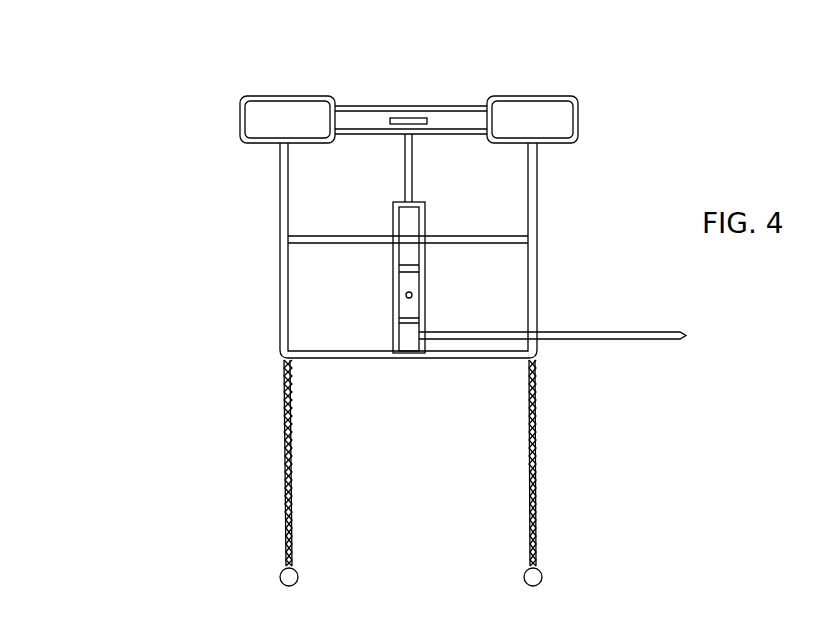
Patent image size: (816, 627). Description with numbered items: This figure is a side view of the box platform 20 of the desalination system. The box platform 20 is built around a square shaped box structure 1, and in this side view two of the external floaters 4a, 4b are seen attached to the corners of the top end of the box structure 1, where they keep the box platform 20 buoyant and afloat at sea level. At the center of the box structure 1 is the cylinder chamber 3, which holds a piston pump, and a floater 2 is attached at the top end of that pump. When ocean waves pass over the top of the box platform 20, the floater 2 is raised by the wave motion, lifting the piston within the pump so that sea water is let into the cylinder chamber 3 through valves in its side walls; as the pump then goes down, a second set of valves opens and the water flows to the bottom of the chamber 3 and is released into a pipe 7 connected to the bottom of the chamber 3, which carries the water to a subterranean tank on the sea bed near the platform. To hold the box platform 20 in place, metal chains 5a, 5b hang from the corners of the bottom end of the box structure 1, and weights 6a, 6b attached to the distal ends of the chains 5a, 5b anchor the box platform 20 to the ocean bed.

The box platform 20 is at (205, 307).
The box structure 1 is at (275, 232).
The floater 2 is at (408, 117).
The cylinder chamber 3 is at (430, 278).
The external floater 4a is at (237, 118).
The external floater 4b is at (583, 120).
The metal chain 5a is at (278, 435).
The metal chain 5b is at (538, 436).
The weight 6a is at (277, 570).
The weight 6b is at (547, 574).
The pipe 7 is at (687, 338).